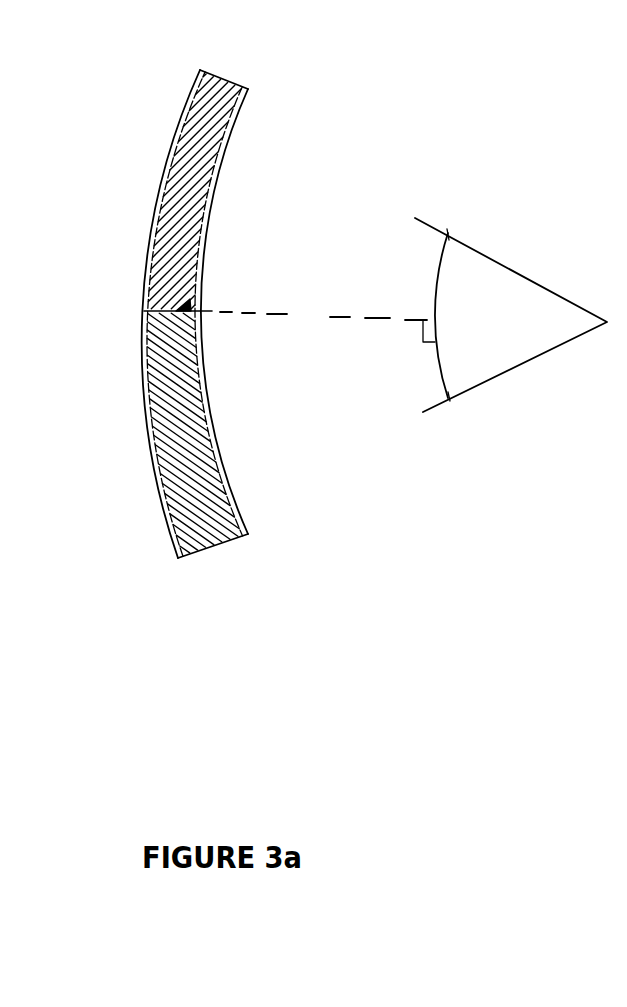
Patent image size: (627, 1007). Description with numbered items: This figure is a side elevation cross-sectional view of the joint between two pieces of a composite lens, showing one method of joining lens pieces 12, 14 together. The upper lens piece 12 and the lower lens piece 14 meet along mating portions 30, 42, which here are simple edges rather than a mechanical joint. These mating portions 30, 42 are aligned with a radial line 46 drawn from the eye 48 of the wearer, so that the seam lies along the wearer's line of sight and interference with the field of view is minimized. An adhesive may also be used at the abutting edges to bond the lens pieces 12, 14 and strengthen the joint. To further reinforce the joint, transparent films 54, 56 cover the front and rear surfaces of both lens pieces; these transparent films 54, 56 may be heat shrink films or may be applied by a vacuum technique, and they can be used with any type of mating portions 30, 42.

The lens piece 12 is at (217, 73).
The lens piece 14 is at (217, 554).
The mating portion 30 is at (143, 322).
The mating portion 42 is at (205, 291).
The radial line 46 is at (298, 313).
The eye 48 is at (438, 255).
The transparent film 54 is at (168, 160).
The transparent film 56 is at (215, 177).